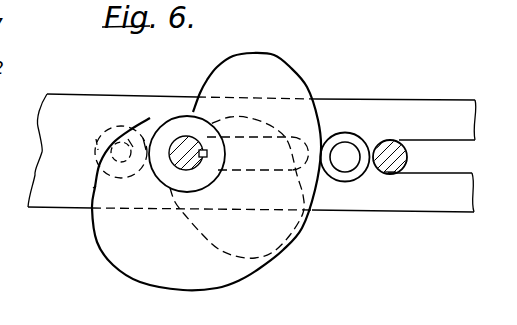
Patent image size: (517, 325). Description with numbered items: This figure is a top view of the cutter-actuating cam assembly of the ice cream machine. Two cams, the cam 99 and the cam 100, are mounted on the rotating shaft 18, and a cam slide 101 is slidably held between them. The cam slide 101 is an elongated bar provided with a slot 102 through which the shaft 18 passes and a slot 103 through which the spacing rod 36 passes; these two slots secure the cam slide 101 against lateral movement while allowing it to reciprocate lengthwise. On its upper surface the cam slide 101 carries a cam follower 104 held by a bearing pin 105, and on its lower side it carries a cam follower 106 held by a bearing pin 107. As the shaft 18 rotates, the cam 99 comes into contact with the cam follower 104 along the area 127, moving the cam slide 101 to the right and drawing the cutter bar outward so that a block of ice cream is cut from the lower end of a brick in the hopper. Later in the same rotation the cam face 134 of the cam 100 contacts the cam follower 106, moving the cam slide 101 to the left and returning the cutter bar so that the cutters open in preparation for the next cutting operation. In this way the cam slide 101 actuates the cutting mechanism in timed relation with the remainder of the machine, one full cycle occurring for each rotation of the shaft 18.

The shaft 18 is at (182, 138).
The spacing rod 36 is at (390, 175).
The cam 99 is at (206, 171).
The cam 100 is at (271, 262).
The cam slide 101 is at (384, 106).
The slot 102 is at (291, 140).
The slot 103 is at (442, 141).
The cam follower 104 is at (339, 133).
The bearing pin 105 is at (355, 148).
The cam follower 106 is at (96, 139).
The bearing pin 107 is at (131, 127).
The area 127 is at (93, 188).
The cam face 134 is at (231, 259).